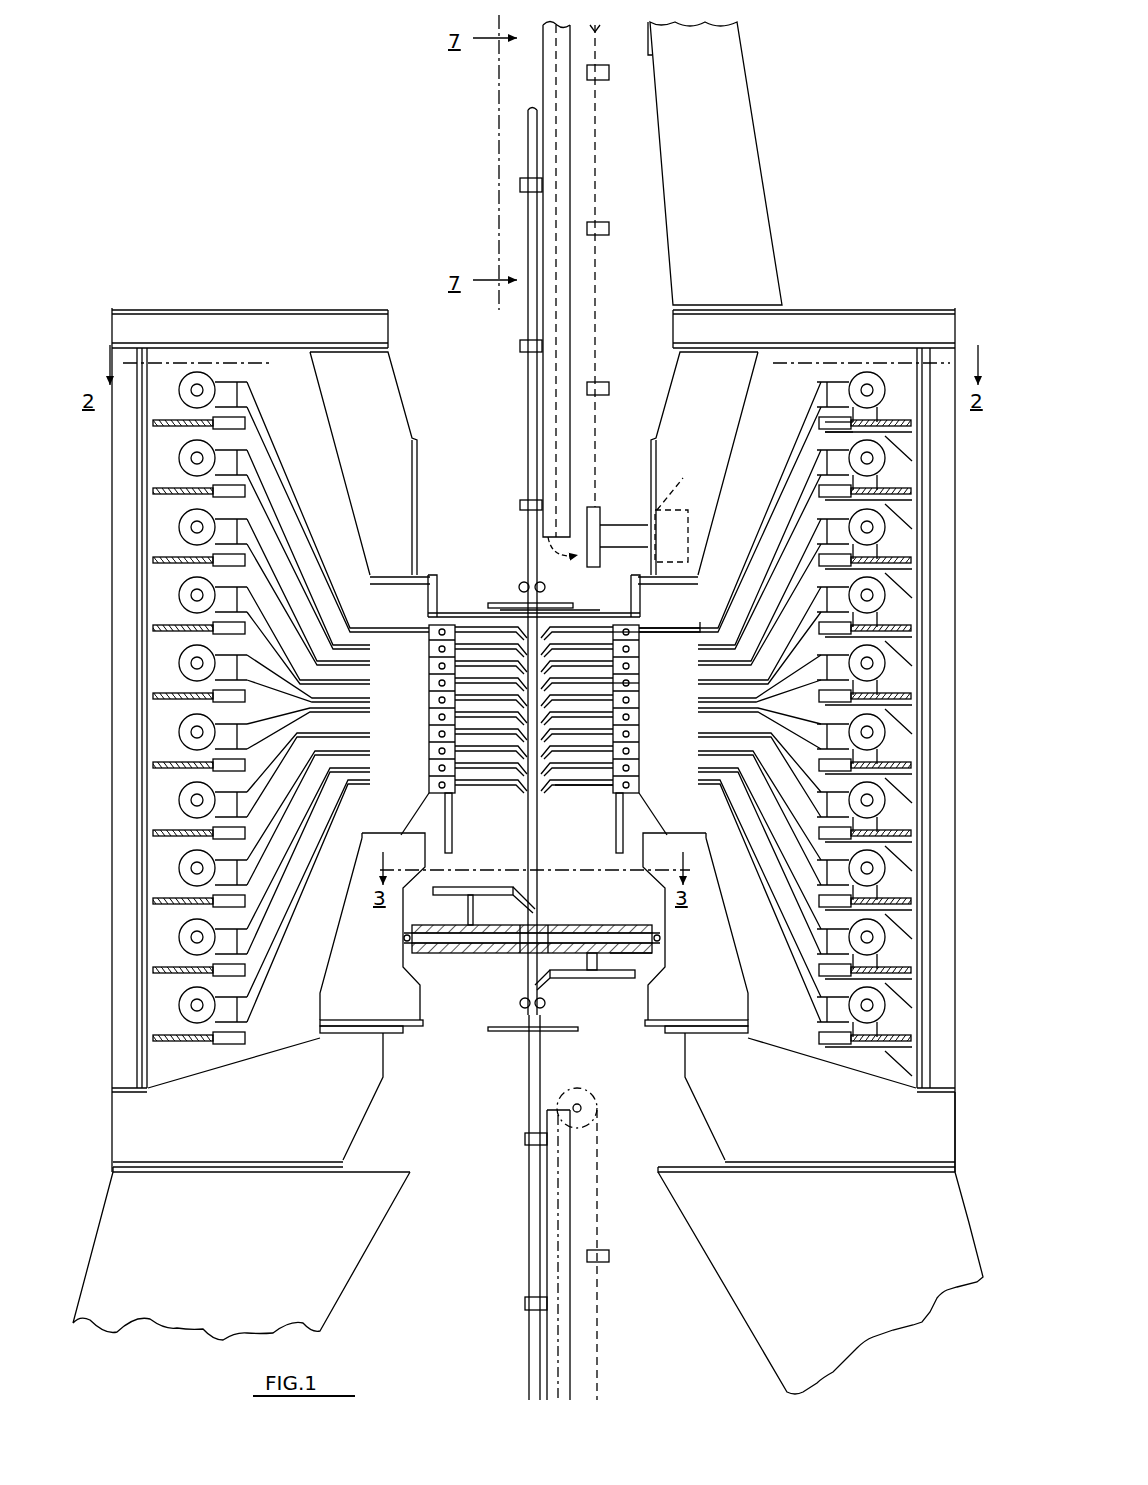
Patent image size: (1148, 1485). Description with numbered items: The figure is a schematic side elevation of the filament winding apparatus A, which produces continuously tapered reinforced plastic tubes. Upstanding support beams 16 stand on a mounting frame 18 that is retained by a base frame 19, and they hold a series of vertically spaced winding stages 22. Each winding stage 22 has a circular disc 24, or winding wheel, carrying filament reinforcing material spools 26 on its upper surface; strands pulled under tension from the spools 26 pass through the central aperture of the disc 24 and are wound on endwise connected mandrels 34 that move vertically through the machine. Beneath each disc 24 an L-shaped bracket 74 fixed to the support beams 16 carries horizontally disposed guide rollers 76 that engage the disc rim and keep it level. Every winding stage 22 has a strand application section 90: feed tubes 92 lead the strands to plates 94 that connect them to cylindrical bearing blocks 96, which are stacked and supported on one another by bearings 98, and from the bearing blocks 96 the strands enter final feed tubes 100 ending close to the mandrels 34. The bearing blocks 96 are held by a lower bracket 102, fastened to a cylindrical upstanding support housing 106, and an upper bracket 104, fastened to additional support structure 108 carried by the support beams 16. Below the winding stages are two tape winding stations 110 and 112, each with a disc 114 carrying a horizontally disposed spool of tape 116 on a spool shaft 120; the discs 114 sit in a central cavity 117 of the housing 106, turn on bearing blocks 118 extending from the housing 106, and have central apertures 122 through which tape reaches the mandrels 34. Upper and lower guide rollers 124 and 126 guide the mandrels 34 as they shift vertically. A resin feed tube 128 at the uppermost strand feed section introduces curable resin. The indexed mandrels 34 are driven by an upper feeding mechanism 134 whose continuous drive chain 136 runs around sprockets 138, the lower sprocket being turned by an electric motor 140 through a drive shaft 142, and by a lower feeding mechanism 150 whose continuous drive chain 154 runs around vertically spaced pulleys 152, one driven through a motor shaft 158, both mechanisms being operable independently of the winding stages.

The upstanding support beams 16 is at (120, 465).
The mounting frame 18 is at (935, 1122).
The base frame 19 is at (955, 1215).
The winding stages 22 is at (832, 368).
The circular disc 24 is at (905, 427).
The filament reinforcing material spools 26 is at (190, 385).
The mandrels 34 is at (526, 420).
The L-shaped brackets 74 is at (832, 434).
The guide rollers 76 is at (832, 420).
The strand application section 90 is at (455, 620).
The feed tubes 92 is at (740, 572).
The plates 94 is at (668, 632).
The bearing blocks 96 is at (632, 634).
The bearings 98 is at (628, 684).
The final feed tubes 100 is at (545, 788).
The lower bracket 102 is at (452, 818).
The upper bracket 104 is at (450, 573).
The upstanding support housing 106 is at (403, 1035).
The additional support structure 108 is at (398, 385).
The tape winding station 110 is at (626, 926).
The tape winding station 112 is at (478, 958).
The disc 114 is at (648, 946).
The spool of tape 116 is at (470, 887).
The central cavity 117 is at (456, 1030).
The bearing blocks 118 is at (662, 942).
The spool shafts 120 is at (474, 912).
The central apertures 122 is at (525, 953).
The upper guide rollers 124 is at (520, 582).
The lower guide rollers 126 is at (547, 1007).
The resin feed tube 128 is at (548, 624).
The upper feeding mechanism 134 is at (605, 267).
The continuous drive chain 136 is at (595, 112).
The sprockets 138 is at (598, 505).
The electric motor 140 is at (679, 505).
The drive shaft 142 is at (622, 525).
The lower feeding mechanism 150 is at (612, 1168).
The pulleys 152 is at (583, 1108).
The continuous drive chain 154 is at (604, 1190).
The motor shaft 158 is at (595, 1093).
The filament winding apparatus A is at (820, 112).